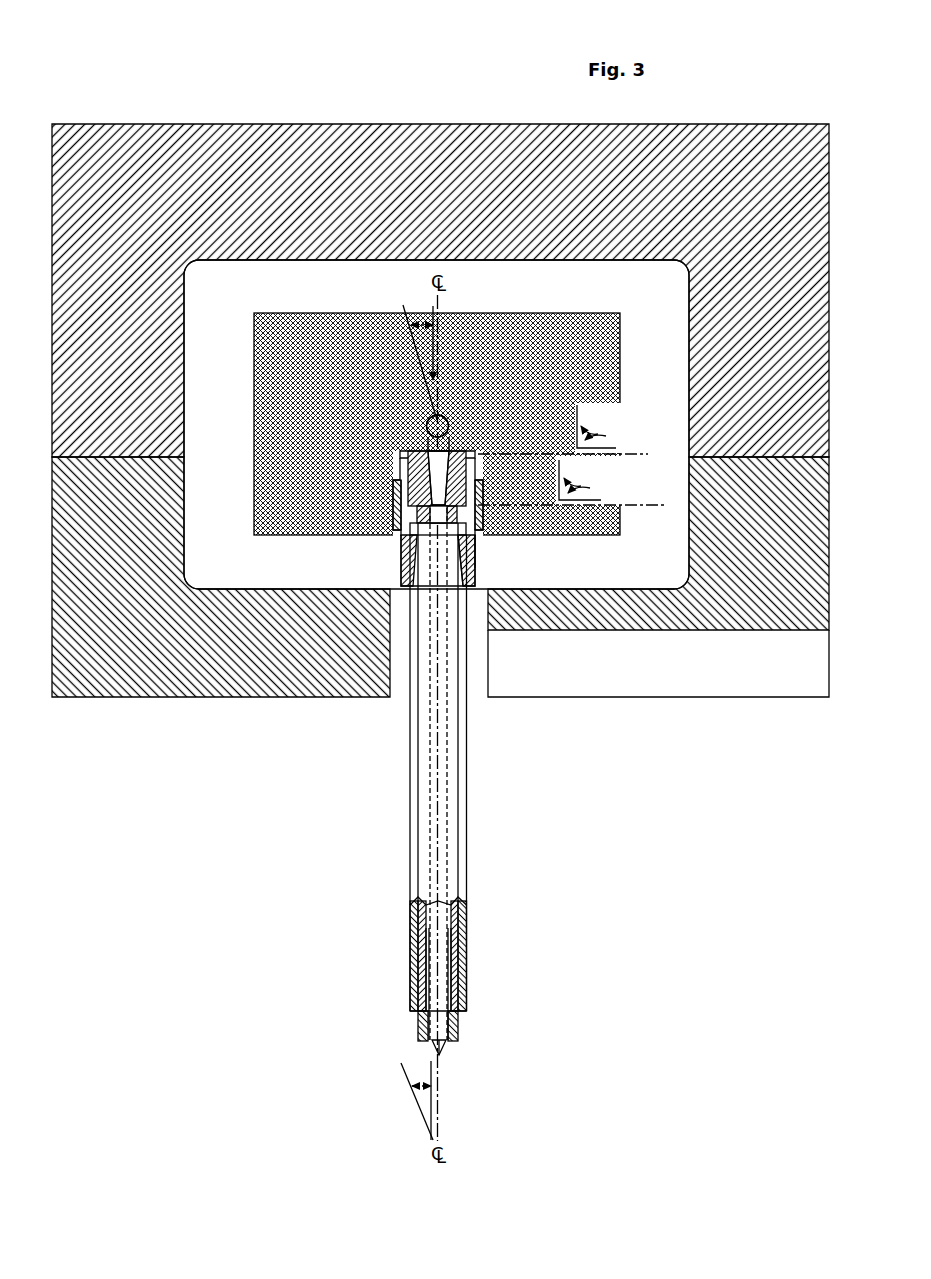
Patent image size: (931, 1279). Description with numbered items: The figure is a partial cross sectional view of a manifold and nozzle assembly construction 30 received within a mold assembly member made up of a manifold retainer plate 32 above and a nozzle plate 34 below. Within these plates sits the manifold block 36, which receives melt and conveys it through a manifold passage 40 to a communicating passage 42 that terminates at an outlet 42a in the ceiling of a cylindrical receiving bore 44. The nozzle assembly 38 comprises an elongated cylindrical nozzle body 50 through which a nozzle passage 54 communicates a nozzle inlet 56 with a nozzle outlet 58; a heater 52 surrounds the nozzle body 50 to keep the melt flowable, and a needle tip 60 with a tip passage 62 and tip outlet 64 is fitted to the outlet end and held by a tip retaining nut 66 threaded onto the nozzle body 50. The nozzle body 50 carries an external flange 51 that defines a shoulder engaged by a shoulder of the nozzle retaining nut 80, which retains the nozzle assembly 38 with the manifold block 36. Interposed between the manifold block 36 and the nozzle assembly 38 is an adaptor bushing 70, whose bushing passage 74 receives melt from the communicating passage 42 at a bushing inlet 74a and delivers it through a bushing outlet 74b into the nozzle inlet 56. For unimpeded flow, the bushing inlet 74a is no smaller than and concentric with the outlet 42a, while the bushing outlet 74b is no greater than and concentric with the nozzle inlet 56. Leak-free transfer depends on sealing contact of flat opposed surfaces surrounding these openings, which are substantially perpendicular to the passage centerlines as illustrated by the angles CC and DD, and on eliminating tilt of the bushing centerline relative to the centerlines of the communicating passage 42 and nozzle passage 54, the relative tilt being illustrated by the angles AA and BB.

The manifold and nozzle assembly construction 30 is at (621, 294).
The manifold retainer plate 32 is at (153, 184).
The nozzle plate 34 is at (104, 548).
The manifold block 36 is at (564, 348).
The nozzle assembly 38 is at (501, 743).
The manifold passage 40 is at (422, 406).
The communicating passage 42 is at (420, 412).
The outlet of communicating passage 42a is at (428, 484).
The receiving bore 44 is at (424, 449).
The nozzle body 50 is at (452, 917).
The external flange 51 is at (396, 558).
The heater 52 is at (404, 946).
The nozzle passage 54 is at (410, 917).
The nozzle inlet 56 is at (470, 542).
The nozzle outlet 58 is at (410, 1008).
The needle tip 60 is at (450, 1017).
The tip passage 62 is at (452, 950).
The tip outlet 64 is at (436, 1042).
The tip retaining nut 66 is at (441, 1030).
The adaptor bushing 70 is at (467, 531).
The bushing passage 74 is at (436, 432).
The bushing inlet 74a is at (400, 449).
The bushing outlet 74b is at (385, 478).
The nozzle retaining nut 80 is at (396, 506).
The angle AA is at (410, 294).
The angle BB is at (410, 1063).
The angle CC is at (590, 426).
The angle DD is at (573, 478).